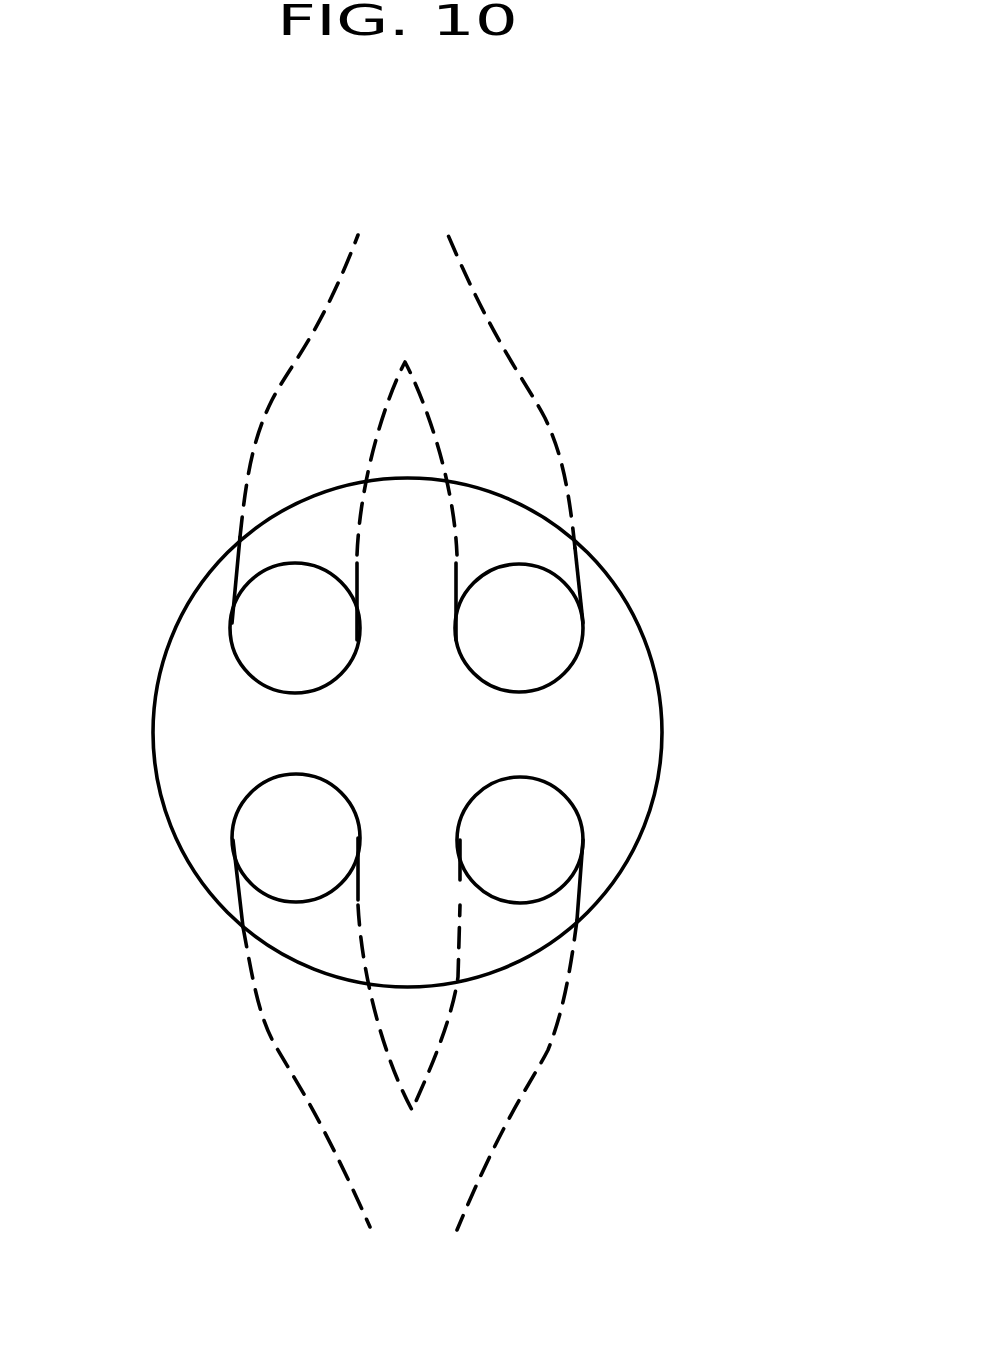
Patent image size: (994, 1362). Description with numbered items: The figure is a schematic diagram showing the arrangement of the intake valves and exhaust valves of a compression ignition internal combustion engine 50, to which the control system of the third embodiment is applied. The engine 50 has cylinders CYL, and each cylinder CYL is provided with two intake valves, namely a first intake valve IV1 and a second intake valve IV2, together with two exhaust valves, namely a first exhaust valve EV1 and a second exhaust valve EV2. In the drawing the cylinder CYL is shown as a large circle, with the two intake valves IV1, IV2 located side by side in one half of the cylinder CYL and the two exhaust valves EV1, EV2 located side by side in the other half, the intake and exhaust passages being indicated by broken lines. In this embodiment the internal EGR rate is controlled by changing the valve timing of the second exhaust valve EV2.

The cylinder CYL is at (606, 578).
The first intake valve IV1 is at (245, 665).
The second intake valve IV2 is at (578, 652).
The first exhaust valve EV1 is at (236, 812).
The second exhaust valve EV2 is at (580, 805).
The compression ignition internal combustion engine 50 is at (678, 957).